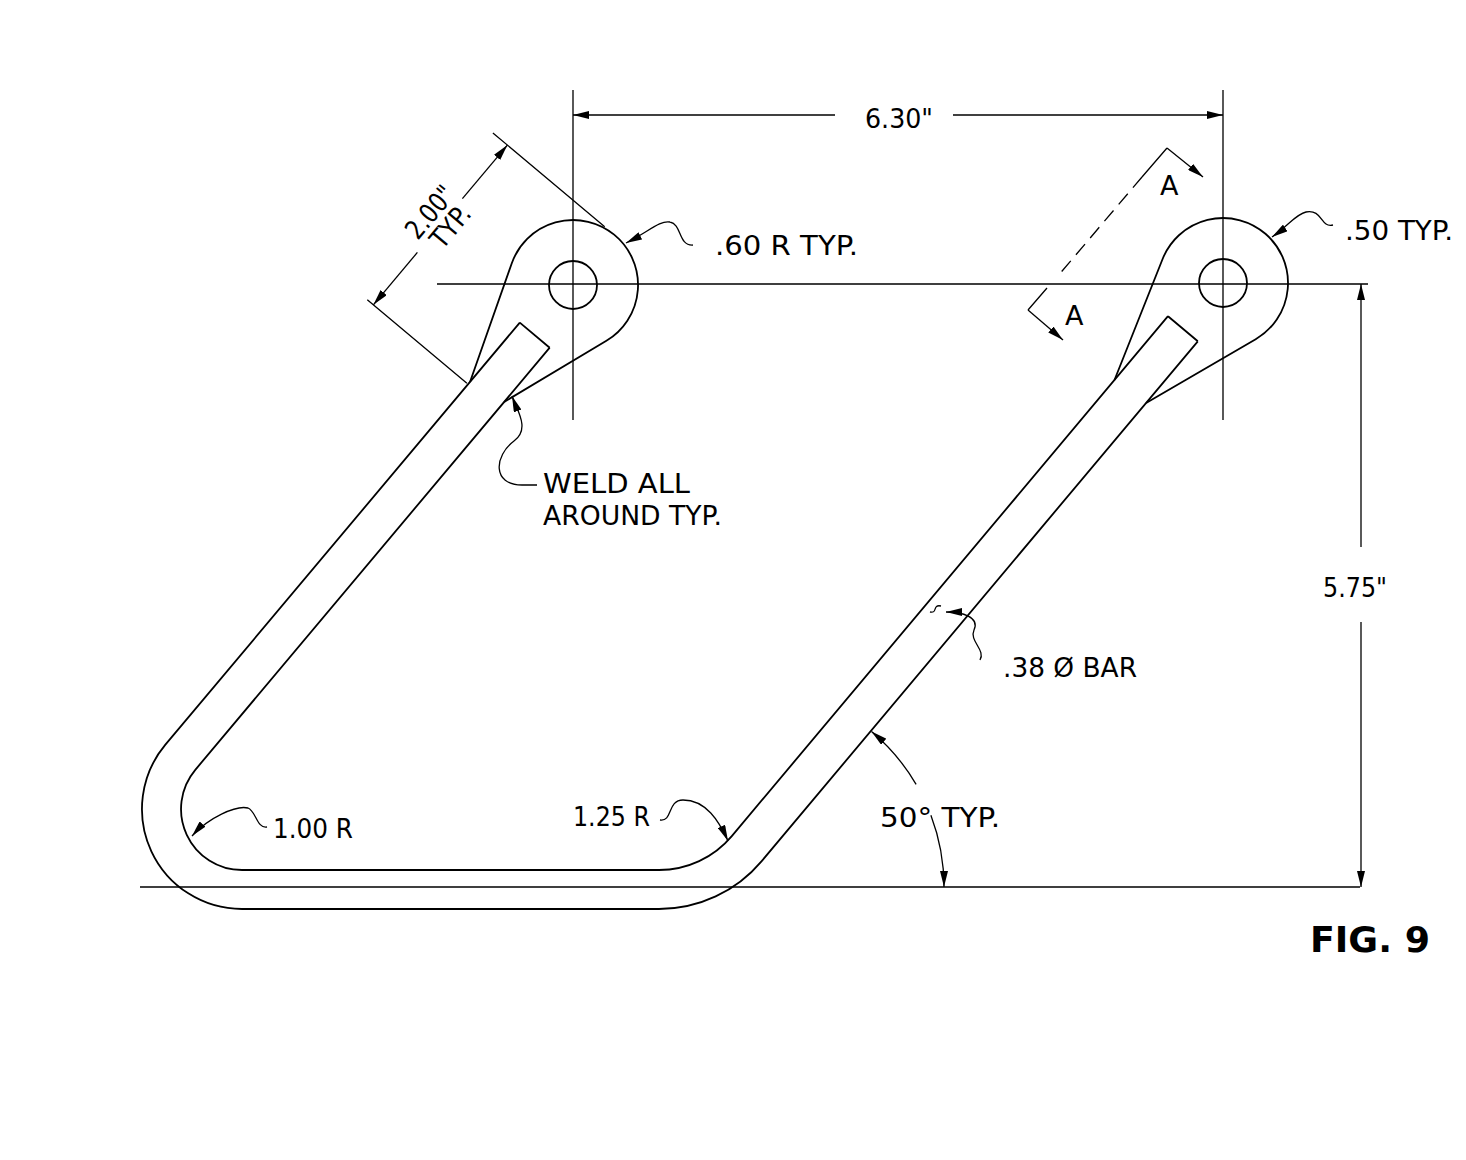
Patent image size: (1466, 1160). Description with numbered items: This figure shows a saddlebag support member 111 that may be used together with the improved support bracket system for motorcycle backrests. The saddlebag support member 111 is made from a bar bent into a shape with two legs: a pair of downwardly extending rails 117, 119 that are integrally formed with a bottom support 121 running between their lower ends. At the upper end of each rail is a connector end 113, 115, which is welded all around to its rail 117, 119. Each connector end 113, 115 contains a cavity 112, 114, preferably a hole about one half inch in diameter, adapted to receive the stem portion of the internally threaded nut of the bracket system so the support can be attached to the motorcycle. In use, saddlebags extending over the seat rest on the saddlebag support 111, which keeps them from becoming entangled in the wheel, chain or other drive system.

The saddlebag support member 111 is at (670, 612).
The cavity 112 is at (582, 276).
The connector end 113 is at (610, 328).
The cavity 114 is at (1231, 264).
The connector end 115 is at (1258, 318).
The downwardly extending rail 117 is at (255, 682).
The downwardly extending rail 119 is at (1028, 523).
The bottom support 121 is at (422, 870).